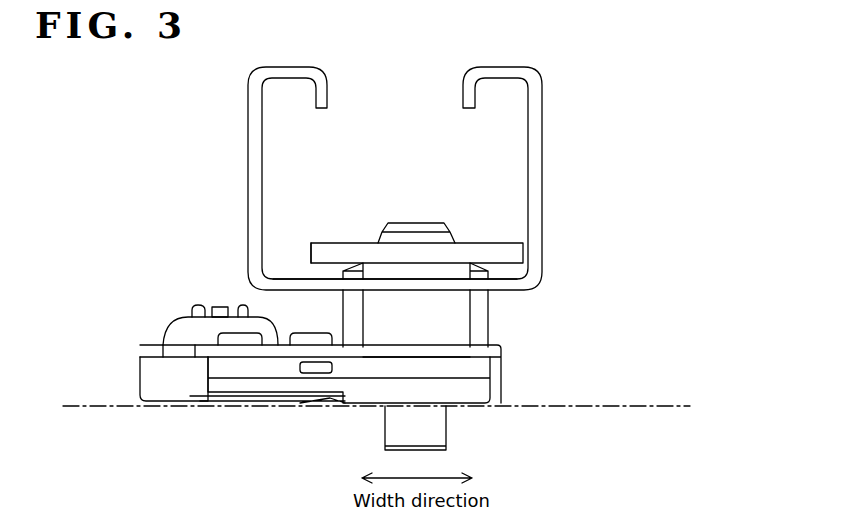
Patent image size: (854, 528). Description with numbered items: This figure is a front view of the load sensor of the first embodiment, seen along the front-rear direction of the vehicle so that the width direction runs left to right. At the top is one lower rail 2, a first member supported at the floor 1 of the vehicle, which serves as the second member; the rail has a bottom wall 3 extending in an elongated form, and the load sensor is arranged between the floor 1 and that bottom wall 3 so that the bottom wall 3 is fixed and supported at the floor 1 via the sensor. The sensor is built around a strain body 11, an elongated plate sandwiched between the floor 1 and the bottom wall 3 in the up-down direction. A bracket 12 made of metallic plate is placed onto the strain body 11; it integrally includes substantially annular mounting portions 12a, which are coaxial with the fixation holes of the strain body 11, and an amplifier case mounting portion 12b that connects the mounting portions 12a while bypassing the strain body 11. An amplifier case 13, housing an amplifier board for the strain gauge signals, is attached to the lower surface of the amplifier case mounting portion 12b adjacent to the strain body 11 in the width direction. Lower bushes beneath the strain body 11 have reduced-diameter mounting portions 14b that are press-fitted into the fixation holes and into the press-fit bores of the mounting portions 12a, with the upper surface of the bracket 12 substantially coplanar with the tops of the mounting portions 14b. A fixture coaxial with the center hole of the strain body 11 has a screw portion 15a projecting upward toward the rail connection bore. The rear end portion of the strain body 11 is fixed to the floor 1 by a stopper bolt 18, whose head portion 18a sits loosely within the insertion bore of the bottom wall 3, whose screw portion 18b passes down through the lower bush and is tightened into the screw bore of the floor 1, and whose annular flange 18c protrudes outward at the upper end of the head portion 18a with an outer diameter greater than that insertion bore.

The floor 1 is at (645, 407).
The lower rail 2 is at (558, 249).
The bottom wall 3 is at (291, 279).
The strain body 11 is at (483, 368).
The bracket 12 is at (498, 350).
The mounting portion 12a is at (405, 352).
The amplifier case mounting portion 12b is at (250, 350).
The amplifier case 13 is at (168, 393).
The mounting portion 14b is at (360, 398).
The screw portion 15a is at (400, 222).
The stopper bolt 18 is at (428, 252).
The head portion 18a is at (458, 311).
The screw portion 18b is at (440, 428).
The flange 18c is at (345, 246).